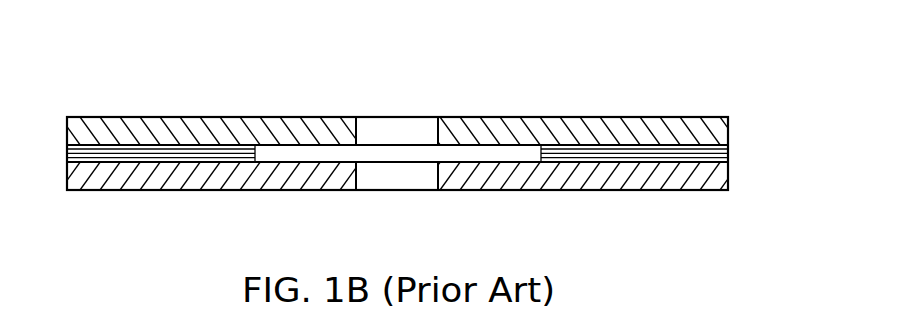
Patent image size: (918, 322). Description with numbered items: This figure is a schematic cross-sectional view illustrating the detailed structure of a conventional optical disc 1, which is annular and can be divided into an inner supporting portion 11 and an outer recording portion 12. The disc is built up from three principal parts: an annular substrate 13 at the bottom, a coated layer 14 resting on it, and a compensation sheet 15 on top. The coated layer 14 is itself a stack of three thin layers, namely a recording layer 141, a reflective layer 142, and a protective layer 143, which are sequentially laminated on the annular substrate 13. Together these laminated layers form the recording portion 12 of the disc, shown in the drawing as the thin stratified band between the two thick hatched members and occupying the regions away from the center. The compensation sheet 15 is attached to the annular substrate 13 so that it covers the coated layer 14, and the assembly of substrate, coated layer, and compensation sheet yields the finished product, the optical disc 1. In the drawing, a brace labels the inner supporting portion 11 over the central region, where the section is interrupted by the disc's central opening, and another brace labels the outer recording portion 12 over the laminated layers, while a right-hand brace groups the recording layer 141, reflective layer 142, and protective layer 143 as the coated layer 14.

The optical disc 1 is at (47, 63).
The inner supporting portion 11 is at (508, 102).
The outer recording portion 12 is at (255, 102).
The annular substrate 13 is at (627, 191).
The coated layer 14 is at (810, 116).
The recording layer 141 is at (728, 159).
The reflective layer 142 is at (728, 153).
The protective layer 143 is at (728, 148).
The compensation sheet 15 is at (627, 127).